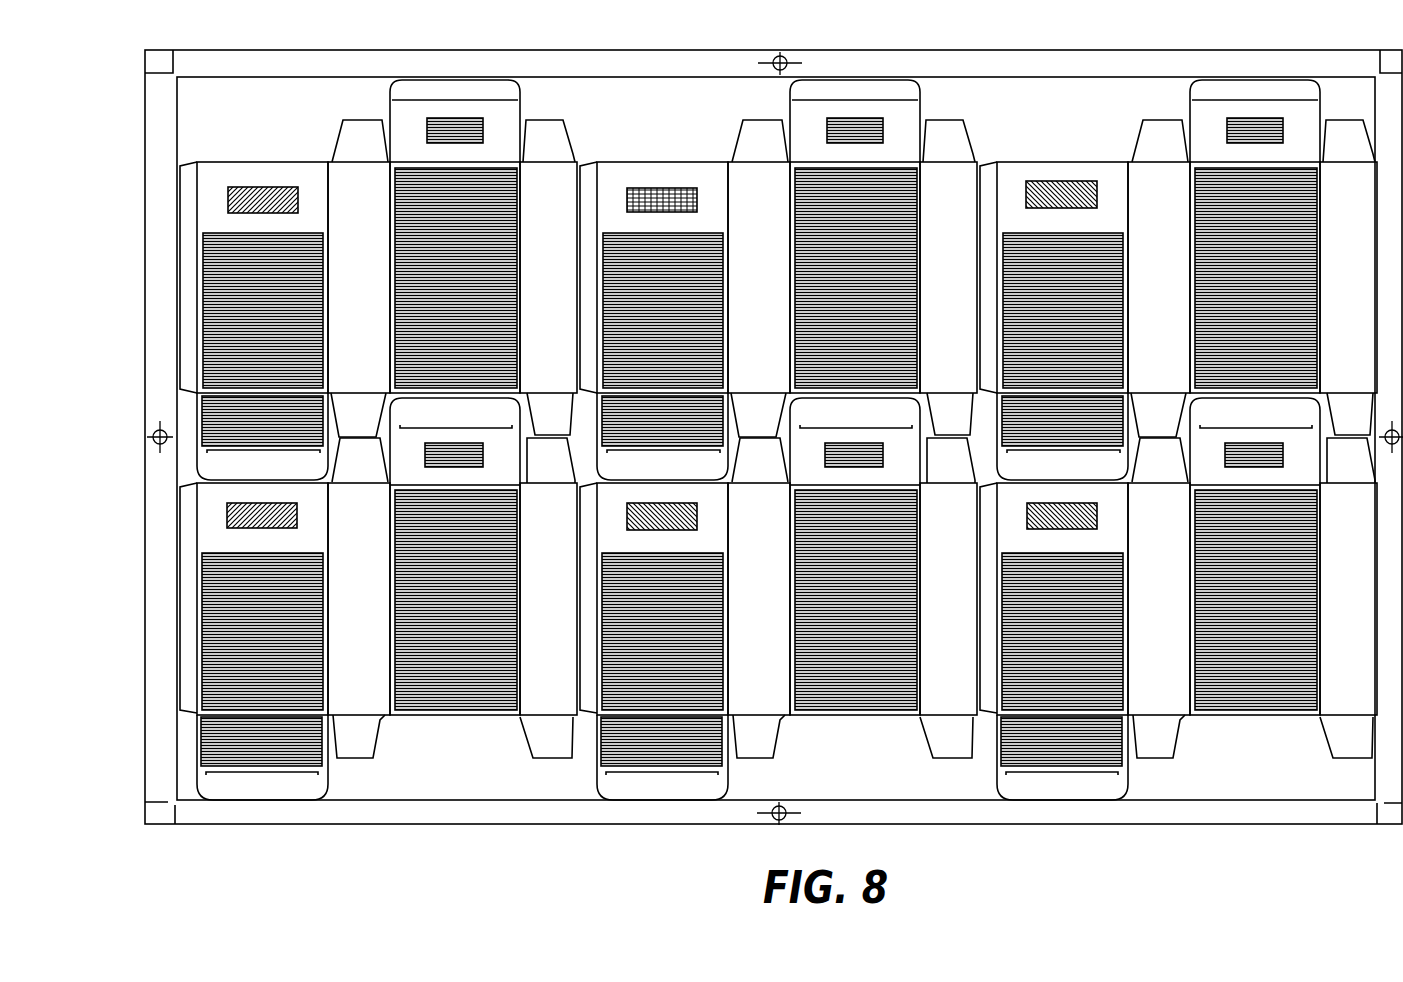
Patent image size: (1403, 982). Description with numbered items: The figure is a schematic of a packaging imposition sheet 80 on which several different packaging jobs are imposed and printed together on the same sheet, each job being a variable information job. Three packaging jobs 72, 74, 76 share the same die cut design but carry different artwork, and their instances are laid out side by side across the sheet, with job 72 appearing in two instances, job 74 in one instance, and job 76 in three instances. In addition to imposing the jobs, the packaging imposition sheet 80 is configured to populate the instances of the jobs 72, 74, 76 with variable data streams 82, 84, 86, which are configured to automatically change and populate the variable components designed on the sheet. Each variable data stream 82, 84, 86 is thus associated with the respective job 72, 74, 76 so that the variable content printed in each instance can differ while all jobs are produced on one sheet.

The job 72 is at (375, 154).
The job 74 is at (773, 154).
The job 76 is at (1173, 154).
The packaging imposition sheet 80 is at (170, 846).
The variable data stream 82 is at (270, 213).
The variable data stream 84 is at (669, 212).
The variable data stream 86 is at (1069, 208).